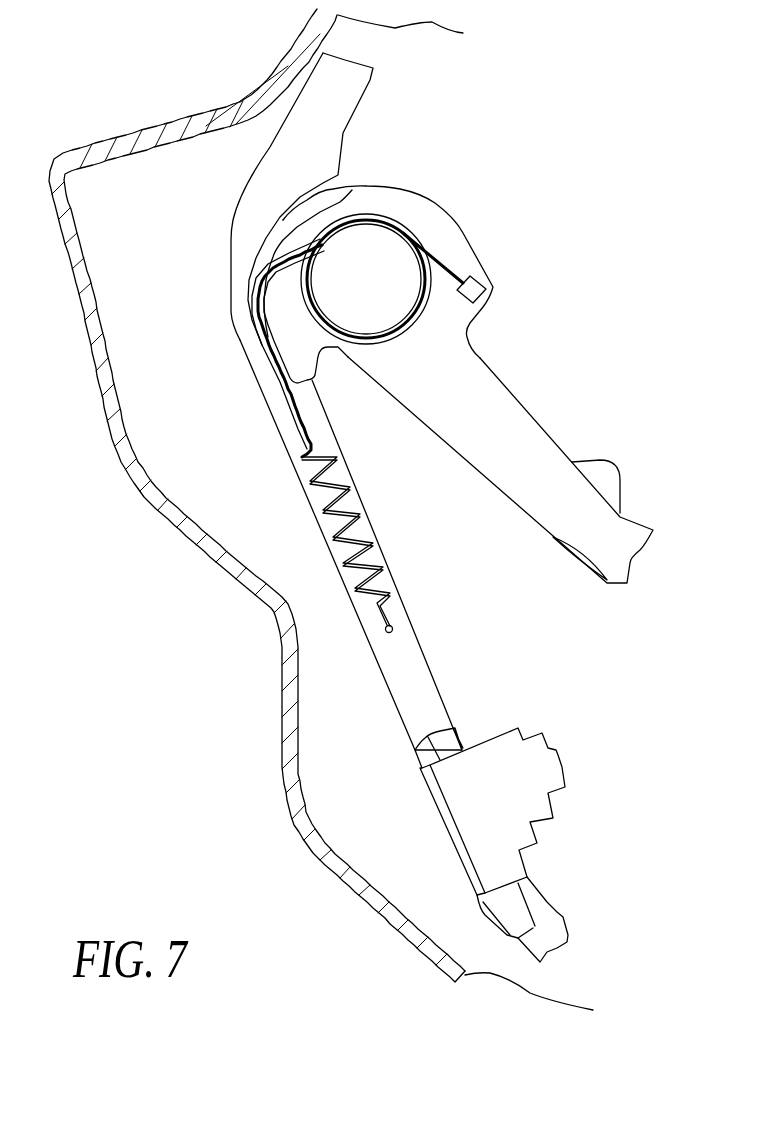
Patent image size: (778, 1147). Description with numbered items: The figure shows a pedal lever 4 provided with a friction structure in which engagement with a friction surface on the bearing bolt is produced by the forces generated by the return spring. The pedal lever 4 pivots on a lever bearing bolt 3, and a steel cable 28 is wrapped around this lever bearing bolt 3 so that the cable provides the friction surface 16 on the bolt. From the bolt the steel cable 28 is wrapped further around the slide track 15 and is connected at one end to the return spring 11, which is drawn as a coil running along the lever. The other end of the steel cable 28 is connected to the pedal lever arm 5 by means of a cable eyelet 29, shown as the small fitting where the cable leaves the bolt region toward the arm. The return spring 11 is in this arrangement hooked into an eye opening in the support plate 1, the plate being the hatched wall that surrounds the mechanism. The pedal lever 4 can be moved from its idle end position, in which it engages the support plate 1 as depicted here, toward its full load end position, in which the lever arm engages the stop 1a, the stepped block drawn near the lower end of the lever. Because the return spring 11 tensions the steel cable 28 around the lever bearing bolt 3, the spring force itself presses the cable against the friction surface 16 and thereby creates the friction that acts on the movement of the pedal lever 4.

The support plate 1 is at (407, 670).
The stop 1a is at (558, 758).
The lever bearing bolt 3 is at (368, 312).
The pedal lever 4 is at (380, 168).
The pedal lever arm 5 is at (507, 425).
The return spring 11 is at (363, 502).
The slide track 15 is at (267, 300).
The friction surface 16 is at (405, 235).
The steel cable 28 is at (297, 245).
The cable eyelet 29 is at (487, 290).